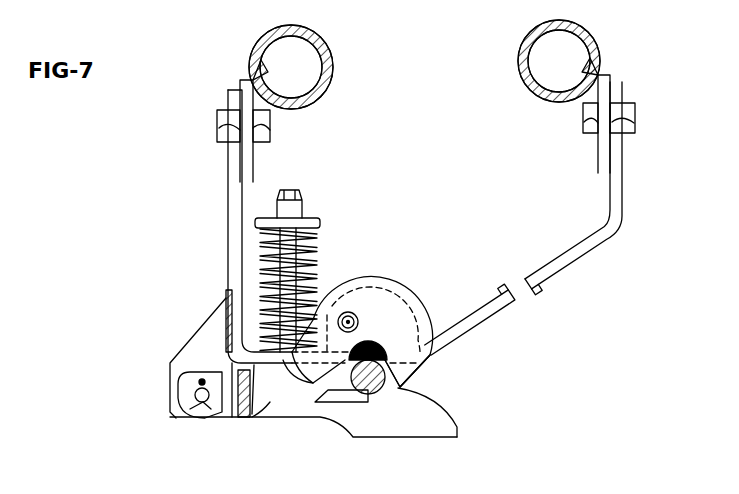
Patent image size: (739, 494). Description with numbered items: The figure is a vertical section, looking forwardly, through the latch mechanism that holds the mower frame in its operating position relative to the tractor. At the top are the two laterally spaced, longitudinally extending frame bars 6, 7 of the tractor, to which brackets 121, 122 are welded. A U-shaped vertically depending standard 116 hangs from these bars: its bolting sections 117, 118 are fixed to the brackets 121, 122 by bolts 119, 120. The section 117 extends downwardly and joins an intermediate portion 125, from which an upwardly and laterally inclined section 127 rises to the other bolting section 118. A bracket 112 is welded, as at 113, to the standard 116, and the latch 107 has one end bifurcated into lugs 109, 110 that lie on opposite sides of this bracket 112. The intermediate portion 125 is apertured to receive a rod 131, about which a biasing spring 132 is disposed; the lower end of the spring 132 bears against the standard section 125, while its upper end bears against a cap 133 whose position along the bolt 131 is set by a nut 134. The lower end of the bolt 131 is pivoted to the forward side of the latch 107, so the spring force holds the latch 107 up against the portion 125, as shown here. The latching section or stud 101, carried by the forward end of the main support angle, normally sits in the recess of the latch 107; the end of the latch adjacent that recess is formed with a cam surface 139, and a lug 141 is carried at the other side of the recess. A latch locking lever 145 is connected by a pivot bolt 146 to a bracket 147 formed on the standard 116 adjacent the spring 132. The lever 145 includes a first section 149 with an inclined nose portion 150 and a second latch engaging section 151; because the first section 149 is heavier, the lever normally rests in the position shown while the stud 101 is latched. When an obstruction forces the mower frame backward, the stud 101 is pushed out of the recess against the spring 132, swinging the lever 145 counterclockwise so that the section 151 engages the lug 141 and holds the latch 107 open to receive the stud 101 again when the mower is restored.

The frame bar 6 is at (330, 72).
The frame bar 7 is at (520, 66).
The section of standard 117 is at (232, 98).
The section of standard 118 is at (620, 89).
The bolt 119 is at (218, 126).
The bracket 121 is at (262, 128).
The bracket 122 is at (604, 118).
The bolt 120 is at (636, 124).
The weld 113 is at (228, 302).
The U-shaped vertically depending standard 116 is at (588, 264).
The upwardly and laterally inclined section 127 is at (534, 290).
The nut 134 is at (296, 200).
The cap 133 is at (318, 224).
The biasing spring 132 is at (312, 262).
The rod 131 is at (300, 262).
The latch locking lever 145 is at (398, 298).
The pivot bolt 146 is at (352, 311).
The bracket 147 is at (404, 306).
The inclined nose portion 150 is at (418, 370).
The latch engaging section 151 is at (310, 368).
The latching section or stud 101 is at (370, 396).
The lug 141 is at (352, 402).
The first section of latch locking lever 149 is at (398, 388).
The cam surface 139 is at (442, 407).
The latch 107 is at (265, 420).
The intermediate portion 125 is at (267, 408).
The bracket 112 is at (196, 356).
The lug 109 is at (188, 408).
The lug 110 is at (240, 410).